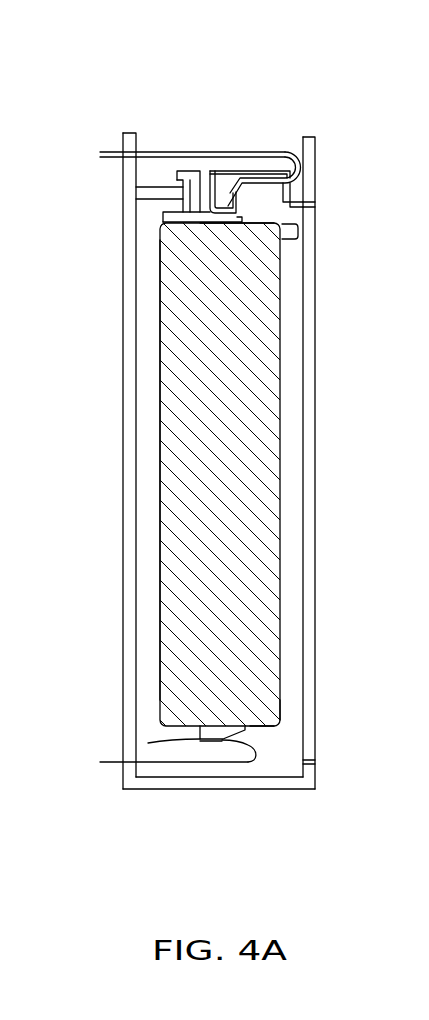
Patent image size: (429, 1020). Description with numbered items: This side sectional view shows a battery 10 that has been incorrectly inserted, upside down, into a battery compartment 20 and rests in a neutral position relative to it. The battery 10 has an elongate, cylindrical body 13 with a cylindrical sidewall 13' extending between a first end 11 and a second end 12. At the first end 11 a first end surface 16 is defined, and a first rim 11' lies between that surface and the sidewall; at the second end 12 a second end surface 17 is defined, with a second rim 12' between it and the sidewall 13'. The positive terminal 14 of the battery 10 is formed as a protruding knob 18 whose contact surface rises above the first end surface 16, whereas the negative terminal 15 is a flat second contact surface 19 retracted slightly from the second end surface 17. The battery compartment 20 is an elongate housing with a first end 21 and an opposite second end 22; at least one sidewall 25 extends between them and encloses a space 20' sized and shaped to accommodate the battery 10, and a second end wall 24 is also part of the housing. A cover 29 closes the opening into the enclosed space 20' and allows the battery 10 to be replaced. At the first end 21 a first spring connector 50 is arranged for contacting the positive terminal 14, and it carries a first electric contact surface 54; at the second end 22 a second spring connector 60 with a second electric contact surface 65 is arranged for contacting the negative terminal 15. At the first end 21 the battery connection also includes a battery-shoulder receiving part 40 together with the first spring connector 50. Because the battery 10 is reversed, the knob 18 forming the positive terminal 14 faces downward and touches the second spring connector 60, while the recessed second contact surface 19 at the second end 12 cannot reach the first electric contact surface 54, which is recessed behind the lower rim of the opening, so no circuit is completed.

The battery 10 is at (218, 492).
The first end 11 is at (302, 703).
The first rim 11' is at (321, 730).
The second end 12 is at (278, 250).
The second rim 12' is at (327, 216).
The body 13 is at (257, 480).
The cylindrical sidewall 13' is at (112, 470).
The positive terminal 14 is at (146, 715).
The negative terminal 15 is at (250, 145).
The first end surface 16 is at (268, 757).
The second end surface 17 is at (273, 199).
The protruding knob 18 is at (220, 739).
The second contact surface 19 is at (235, 205).
The battery compartment 20 is at (208, 456).
The enclosed space 20' is at (325, 374).
The first end 21 is at (122, 200).
The second end 22 is at (230, 488).
The second end wall 24 is at (222, 780).
The sidewall 25 is at (233, 452).
The cover 29 is at (308, 323).
The battery-shoulder receiving part 40 is at (285, 197).
The first spring connector 50 is at (160, 152).
The first electric contact surface 54 is at (230, 215).
The second spring connector 60 is at (172, 765).
The second electric contact surface 65 is at (234, 731).